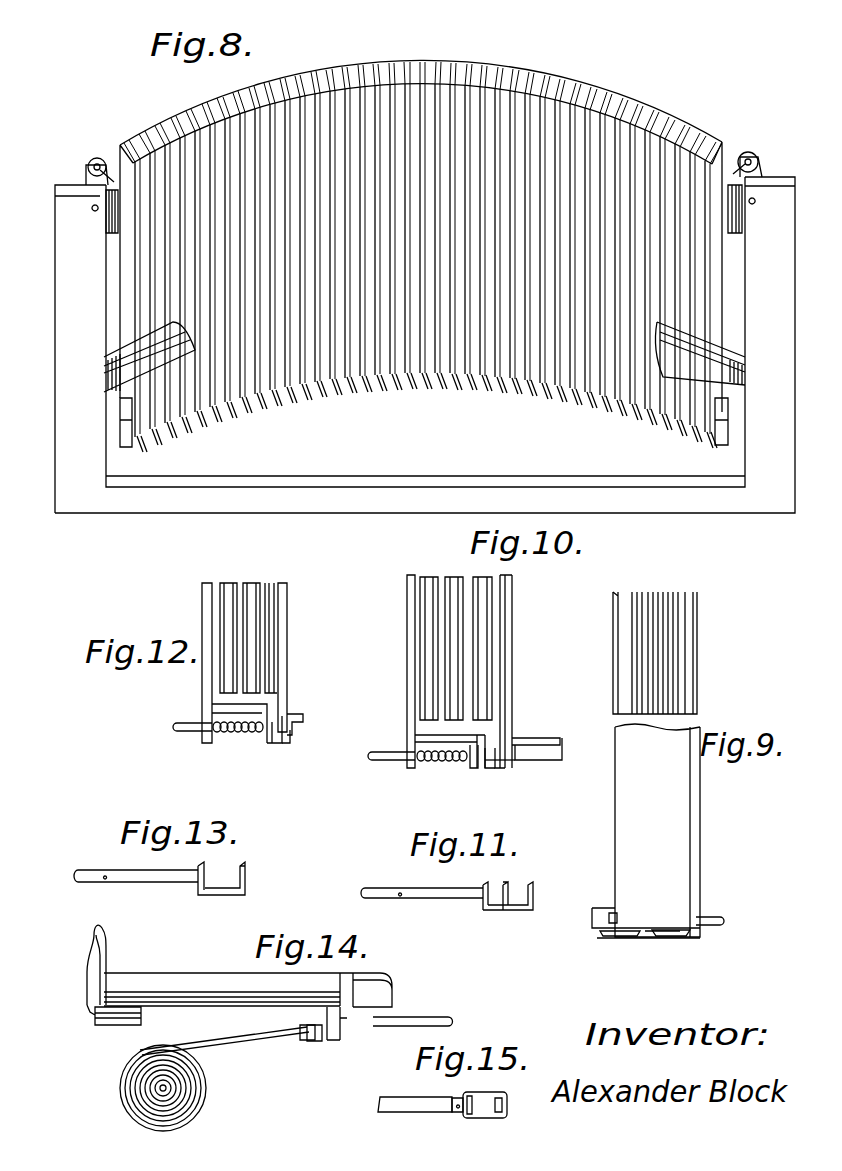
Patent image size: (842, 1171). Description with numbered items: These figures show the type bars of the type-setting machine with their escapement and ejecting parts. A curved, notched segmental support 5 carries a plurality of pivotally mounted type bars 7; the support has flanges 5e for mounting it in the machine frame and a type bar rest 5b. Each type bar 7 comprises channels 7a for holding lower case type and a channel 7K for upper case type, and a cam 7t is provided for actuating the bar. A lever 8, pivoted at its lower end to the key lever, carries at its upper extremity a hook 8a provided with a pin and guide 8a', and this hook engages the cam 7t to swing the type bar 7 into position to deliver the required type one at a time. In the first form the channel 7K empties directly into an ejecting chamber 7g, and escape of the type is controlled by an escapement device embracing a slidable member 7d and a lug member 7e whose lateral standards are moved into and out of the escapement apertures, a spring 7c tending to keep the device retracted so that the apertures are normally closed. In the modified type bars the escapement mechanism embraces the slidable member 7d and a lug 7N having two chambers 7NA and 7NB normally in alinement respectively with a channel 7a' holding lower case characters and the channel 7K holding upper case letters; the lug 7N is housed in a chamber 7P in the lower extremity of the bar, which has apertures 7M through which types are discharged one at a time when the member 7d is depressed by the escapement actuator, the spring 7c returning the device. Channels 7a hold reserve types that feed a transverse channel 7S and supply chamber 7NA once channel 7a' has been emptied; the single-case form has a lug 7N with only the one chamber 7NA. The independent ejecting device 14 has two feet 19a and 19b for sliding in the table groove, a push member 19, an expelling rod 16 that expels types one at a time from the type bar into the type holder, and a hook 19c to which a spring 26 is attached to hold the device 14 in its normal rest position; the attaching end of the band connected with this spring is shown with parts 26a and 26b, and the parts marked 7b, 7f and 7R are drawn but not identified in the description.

In FIG. 8, the segmental support 5 is at (106, 250).
In FIG. 8, the type bar rest 5b is at (135, 362).
In FIG. 8, the flanges 5e is at (68, 310).
In FIG. 8, the type bar 7 is at (313, 78).
In FIG. 12, the type bar 7 is at (284, 672).
In FIG. 10, the type bar 7 is at (407, 632).
In FIG. 9, the type bar 7 is at (678, 813).
In FIG. 12, the channels 7a is at (231, 621).
In FIG. 10, the channels 7a is at (414, 636).
In FIG. 9, the channels 7a is at (695, 653).
In FIG. 10, the channel 7a' is at (470, 634).
In FIG. 12, the corrugation groove 7b is at (252, 583).
In FIG. 10, the corrugation groove 7b is at (452, 580).
In FIG. 9, the corrugation groove 7b is at (665, 590).
In FIG. 12, the spring 7c is at (228, 738).
In FIG. 10, the spring 7c is at (440, 762).
In FIG. 8, the slidable member 7d is at (295, 397).
In FIG. 12, the slidable member 7d is at (190, 725).
In FIG. 10, the slidable member 7d is at (382, 755).
In FIG. 9, the slidable member 7d is at (715, 920).
In FIG. 13, the slidable member 7d is at (157, 882).
In FIG. 11, the slidable member 7d is at (440, 898).
In FIG. 8, the lug member 7e is at (120, 434).
In FIG. 8, the stiffener 7f is at (112, 188).
In FIG. 12, the ejecting chamber 7g is at (255, 711).
In FIG. 10, the ejecting chamber 7g is at (430, 738).
In FIG. 12, the channel 7K is at (275, 586).
In FIG. 10, the channel 7K is at (500, 602).
In FIG. 9, the channel 7K is at (630, 659).
In FIG. 12, the apertures 7M is at (300, 728).
In FIG. 10, the apertures 7M is at (518, 748).
In FIG. 9, the apertures 7M is at (609, 915).
In FIG. 12, the lug 7N is at (287, 740).
In FIG. 10, the lug 7N is at (500, 768).
In FIG. 9, the lug 7N is at (650, 938).
In FIG. 13, the lug 7N is at (245, 870).
In FIG. 11, the lug 7N is at (517, 910).
In FIG. 12, the chamber 7NA is at (275, 740).
In FIG. 10, the chamber 7NA is at (490, 765).
In FIG. 13, the chamber 7NA is at (220, 870).
In FIG. 11, the chamber 7NA is at (492, 890).
In FIG. 10, the chamber 7NB is at (508, 762).
In FIG. 11, the chamber 7NB is at (513, 885).
In FIG. 10, the chamber 7P is at (562, 752).
In FIG. 9, the chamber 7P is at (595, 932).
In FIG. 9, the slot 7R is at (608, 938).
In FIG. 10, the transverse channel 7S is at (472, 765).
In FIG. 9, the transverse channel 7S is at (672, 937).
In FIG. 10, the cam 7t is at (487, 741).
In FIG. 8, the lever 8 is at (85, 176).
In FIG. 8, the hook 8a is at (418, 149).
In FIG. 8, the pin and guide 8a' is at (387, 160).
In FIG. 14, the ejecting mechanism 14 is at (165, 978).
In FIG. 14, the expelling rod 16 is at (452, 1020).
In FIG. 14, the push member 19 is at (92, 945).
In FIG. 14, the foot 19a is at (92, 1018).
In FIG. 14, the foot 19b is at (345, 1022).
In FIG. 14, the hook 19c is at (318, 1041).
In FIG. 14, the spring 26 is at (205, 1088).
In FIG. 14, the strap 26a is at (235, 1042).
In FIG. 15, the strap 26a is at (422, 1112).
In FIG. 14, the buckle 26b is at (308, 1040).
In FIG. 15, the buckle 26b is at (478, 1112).